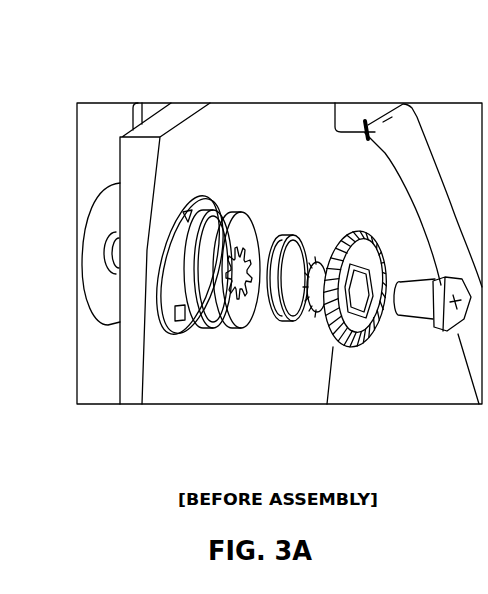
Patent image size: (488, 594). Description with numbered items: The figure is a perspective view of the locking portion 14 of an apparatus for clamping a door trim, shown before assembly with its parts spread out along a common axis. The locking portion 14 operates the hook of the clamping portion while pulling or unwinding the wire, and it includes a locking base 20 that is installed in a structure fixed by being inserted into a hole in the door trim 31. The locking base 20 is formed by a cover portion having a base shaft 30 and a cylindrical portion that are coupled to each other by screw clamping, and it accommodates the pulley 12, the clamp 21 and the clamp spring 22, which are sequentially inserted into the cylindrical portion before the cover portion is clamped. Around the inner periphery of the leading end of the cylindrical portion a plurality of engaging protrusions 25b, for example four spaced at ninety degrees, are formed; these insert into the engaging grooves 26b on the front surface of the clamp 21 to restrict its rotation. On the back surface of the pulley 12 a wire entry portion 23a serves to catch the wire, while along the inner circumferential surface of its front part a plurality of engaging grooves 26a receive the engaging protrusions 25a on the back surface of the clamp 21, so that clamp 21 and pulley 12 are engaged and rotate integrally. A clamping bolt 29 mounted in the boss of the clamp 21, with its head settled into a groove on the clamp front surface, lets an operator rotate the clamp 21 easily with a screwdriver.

The pulley 12 is at (222, 210).
The locking portion 14 is at (318, 245).
The locking base 20 is at (103, 207).
The clamp 21 is at (387, 121).
The clamp spring 22 is at (290, 232).
The wire entry portion 23a is at (208, 330).
The engaging protrusion 25a is at (337, 235).
The engaging protrusion 25b is at (205, 198).
The engaging groove 26a is at (252, 220).
The engaging groove 26b is at (371, 346).
The clamping bolt 29 is at (456, 333).
The base shaft 30 is at (103, 268).
The door trim 31 is at (130, 352).